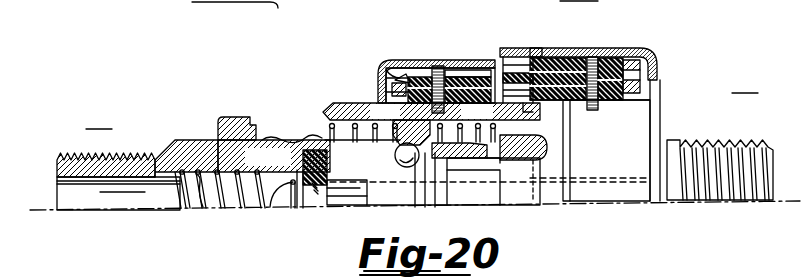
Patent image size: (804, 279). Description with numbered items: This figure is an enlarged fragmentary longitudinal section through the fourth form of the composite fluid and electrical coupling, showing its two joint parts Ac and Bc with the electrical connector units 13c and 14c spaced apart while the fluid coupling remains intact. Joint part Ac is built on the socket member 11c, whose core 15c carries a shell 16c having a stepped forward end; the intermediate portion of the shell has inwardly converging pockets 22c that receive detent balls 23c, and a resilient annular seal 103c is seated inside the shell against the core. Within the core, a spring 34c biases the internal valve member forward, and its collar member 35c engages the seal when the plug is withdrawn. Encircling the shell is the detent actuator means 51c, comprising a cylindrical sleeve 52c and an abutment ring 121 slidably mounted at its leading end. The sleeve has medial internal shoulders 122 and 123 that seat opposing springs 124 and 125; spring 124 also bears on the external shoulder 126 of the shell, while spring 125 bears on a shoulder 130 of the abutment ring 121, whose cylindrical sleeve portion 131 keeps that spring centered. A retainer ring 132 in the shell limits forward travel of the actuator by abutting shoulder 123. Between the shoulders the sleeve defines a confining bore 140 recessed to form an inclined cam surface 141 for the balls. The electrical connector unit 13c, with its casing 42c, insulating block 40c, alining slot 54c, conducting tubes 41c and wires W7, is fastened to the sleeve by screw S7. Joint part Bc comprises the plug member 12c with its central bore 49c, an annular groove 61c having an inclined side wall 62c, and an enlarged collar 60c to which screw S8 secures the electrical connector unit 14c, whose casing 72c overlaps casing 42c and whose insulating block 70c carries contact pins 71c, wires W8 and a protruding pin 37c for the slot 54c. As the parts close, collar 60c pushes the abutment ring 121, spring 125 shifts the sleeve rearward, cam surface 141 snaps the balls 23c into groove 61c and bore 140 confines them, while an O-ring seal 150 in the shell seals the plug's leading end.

The socket member 11c is at (84, 155).
The joint part Ac is at (99, 120).
The core 15c is at (176, 141).
The shell 16c is at (222, 112).
The spring 34c is at (197, 209).
The collar member 35c is at (275, 214).
The resilient annular seal 103c is at (303, 156).
The external shoulder 126 is at (312, 135).
The detent balls 23c is at (362, 160).
The inwardly converging pockets 22c is at (380, 147).
The O-ring seal 150 is at (368, 204).
The inclined cam surface 141 is at (413, 190).
The confining bore 140 is at (430, 196).
The detent actuator means 51c is at (336, 103).
The cylindrical sleeve 52c is at (341, 94).
The wires W7 is at (367, 98).
The electrical connector unit 13c is at (374, 46).
The conducting tubes 41c is at (391, 86).
The casing 42c is at (399, 80).
The insulating block 40c is at (425, 78).
The screw S7 is at (437, 66).
The alining slot 54c is at (458, 64).
The protruding pin 37c is at (514, 62).
The spring 124 is at (329, 110).
The internal shoulder 122 is at (400, 124).
The internal shoulder 123 is at (477, 112).
The spring 125 is at (528, 110).
The shoulder 130 is at (520, 135).
The cylindrical sleeve portion 131 is at (500, 160).
The retainer ring 132 is at (460, 158).
The annular groove 61c is at (445, 197).
The inclined side wall 62c is at (443, 188).
The casing 72c is at (583, 20).
The screw S8 is at (592, 56).
The electrical connector unit 14c is at (648, 37).
The insulating block 70c is at (637, 53).
The contact pins 71c is at (633, 64).
The wires W8 is at (629, 80).
The joint part Bc is at (745, 84).
The enlarged collar 60c is at (661, 108).
The abutment ring 121 is at (548, 145).
The central bore 49c is at (620, 182).
The plug member 12c is at (736, 131).